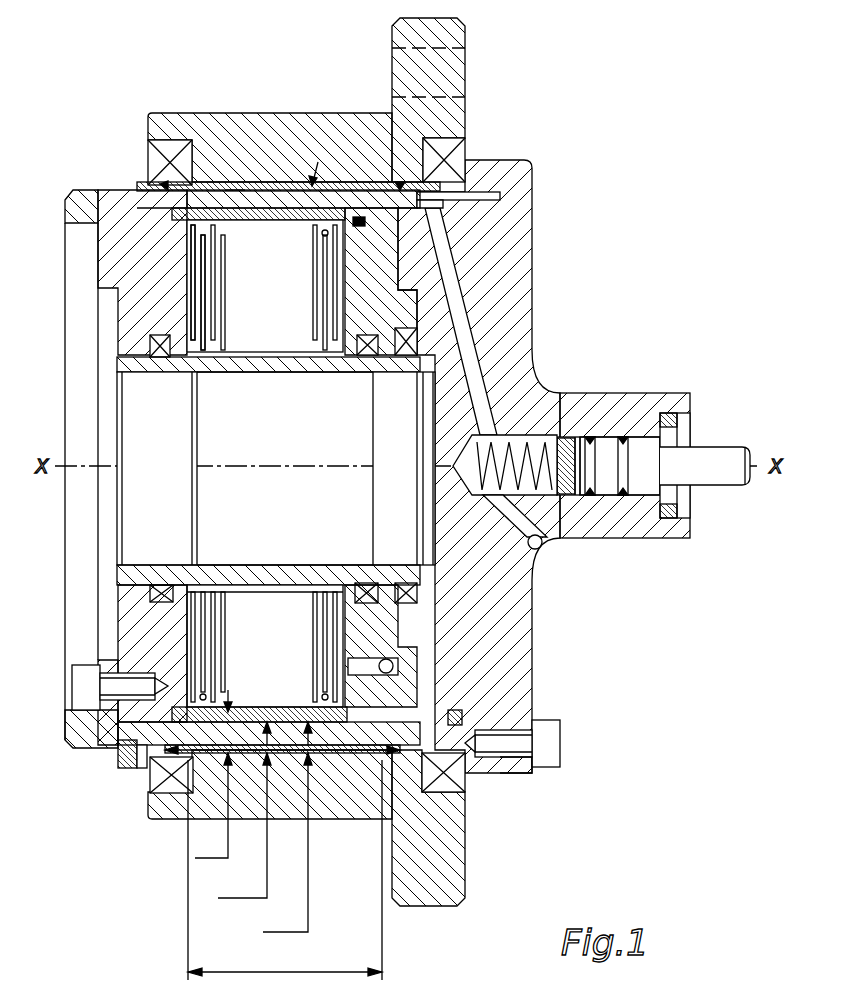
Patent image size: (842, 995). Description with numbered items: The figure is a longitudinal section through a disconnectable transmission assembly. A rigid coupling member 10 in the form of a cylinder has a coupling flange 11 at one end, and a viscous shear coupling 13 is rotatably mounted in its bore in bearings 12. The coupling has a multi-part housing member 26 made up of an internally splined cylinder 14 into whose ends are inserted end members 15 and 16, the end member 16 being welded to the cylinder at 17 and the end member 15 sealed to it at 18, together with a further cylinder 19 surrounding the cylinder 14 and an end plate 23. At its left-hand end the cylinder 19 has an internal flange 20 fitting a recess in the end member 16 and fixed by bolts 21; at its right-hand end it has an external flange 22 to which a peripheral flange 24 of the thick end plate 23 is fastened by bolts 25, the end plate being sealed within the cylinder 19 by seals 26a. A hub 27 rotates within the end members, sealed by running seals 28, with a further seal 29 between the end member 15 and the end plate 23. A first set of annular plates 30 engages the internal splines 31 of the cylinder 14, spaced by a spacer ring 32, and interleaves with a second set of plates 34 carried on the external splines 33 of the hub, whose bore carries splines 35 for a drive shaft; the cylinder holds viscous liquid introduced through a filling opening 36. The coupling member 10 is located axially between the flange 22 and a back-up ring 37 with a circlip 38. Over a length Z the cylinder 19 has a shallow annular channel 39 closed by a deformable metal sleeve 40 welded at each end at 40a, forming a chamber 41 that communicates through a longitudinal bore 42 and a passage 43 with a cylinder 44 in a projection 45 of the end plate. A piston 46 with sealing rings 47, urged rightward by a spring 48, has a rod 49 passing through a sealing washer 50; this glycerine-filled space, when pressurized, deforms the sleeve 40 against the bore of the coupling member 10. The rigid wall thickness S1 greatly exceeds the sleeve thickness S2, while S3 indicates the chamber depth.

The coupling member 10 is at (318, 128).
The coupling flange 11 is at (455, 35).
The bearings 12 is at (445, 150).
The viscous shear coupling 13 is at (265, 286).
The internally splined cylinder 14 is at (277, 214).
The end member 15 is at (381, 281).
The end member 16 is at (128, 318).
The weld 17 is at (160, 222).
The seal 18 is at (358, 227).
The further cylinder 19 is at (270, 200).
The internal flange 20 is at (124, 660).
The bolts 21 is at (78, 705).
The external flange 22 is at (485, 772).
The end plate 23 is at (515, 650).
The peripheral flange 24 is at (525, 768).
The bolts 25 is at (550, 742).
The housing member 26 is at (482, 603).
The seals 26a is at (455, 710).
The hub 27 is at (270, 572).
The running seals 28 is at (367, 360).
The seal 29 is at (403, 360).
The first set of annular plates 30 is at (212, 270).
The internal splines 31 is at (258, 707).
The spacer ring 32 is at (205, 235).
The splines 33 is at (238, 593).
The second set of plates 34 is at (202, 295).
The splines 35 is at (170, 562).
The filling opening 36 is at (366, 668).
The back-up ring 37 is at (142, 768).
The circlip 38 is at (120, 764).
The annular channel 39 is at (232, 190).
The deformable metal sleeve 40 is at (210, 182).
The welds 40a is at (400, 184).
The chamber 41 is at (323, 163).
The longitudinal bore 42 is at (478, 196).
The passage 43 is at (490, 375).
The cylinder 44 is at (525, 440).
The projection 45 is at (605, 394).
The piston 46 is at (640, 497).
The sealing rings 47 is at (623, 497).
The spring 48 is at (537, 475).
The rod 49 is at (715, 447).
The sealing washer 50 is at (668, 415).
The radial wall thickness S1 is at (213, 805).
The sleeve thickness S2 is at (287, 842).
The chamber depth S3 is at (244, 825).
The length Z is at (285, 870).